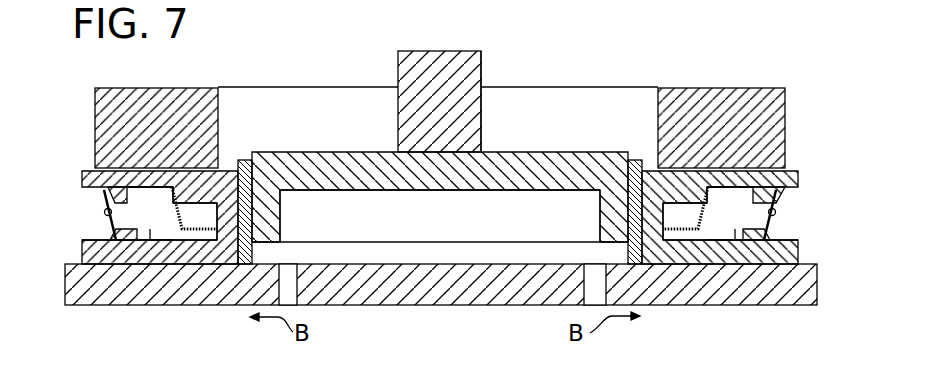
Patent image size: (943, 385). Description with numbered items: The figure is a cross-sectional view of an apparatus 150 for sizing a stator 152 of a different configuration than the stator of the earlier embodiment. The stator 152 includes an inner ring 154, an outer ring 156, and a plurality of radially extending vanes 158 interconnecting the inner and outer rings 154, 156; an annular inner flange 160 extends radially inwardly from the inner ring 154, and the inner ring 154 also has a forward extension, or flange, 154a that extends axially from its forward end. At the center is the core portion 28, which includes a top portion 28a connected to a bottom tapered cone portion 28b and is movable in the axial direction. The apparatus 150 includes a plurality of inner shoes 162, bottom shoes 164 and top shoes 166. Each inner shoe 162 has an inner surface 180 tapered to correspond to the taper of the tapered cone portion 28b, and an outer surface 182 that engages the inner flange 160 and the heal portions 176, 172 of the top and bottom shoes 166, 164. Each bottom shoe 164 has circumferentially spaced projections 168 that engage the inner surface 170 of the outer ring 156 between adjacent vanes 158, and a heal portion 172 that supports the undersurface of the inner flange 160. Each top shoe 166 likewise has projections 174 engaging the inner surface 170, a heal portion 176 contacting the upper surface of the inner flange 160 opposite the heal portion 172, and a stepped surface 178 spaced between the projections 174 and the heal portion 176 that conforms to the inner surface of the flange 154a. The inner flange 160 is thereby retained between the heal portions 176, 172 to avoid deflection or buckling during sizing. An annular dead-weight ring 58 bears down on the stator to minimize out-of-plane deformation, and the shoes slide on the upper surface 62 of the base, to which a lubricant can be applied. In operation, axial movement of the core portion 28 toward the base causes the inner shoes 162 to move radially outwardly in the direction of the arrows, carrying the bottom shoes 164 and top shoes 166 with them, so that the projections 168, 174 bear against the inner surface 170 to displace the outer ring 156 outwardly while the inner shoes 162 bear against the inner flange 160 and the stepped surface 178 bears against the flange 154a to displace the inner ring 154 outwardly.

The apparatus 150 is at (708, 36).
The dead-weight ring 58 is at (112, 88).
The core portion 28 is at (486, 74).
The top portion 28a is at (482, 106).
The bottom tapered cone portion 28b is at (372, 152).
The heal portion 176 is at (240, 205).
The outer surface 182 is at (241, 185).
The inner shoe 162 is at (233, 209).
The inner surface 180 is at (250, 216).
The upper surface 62 is at (398, 264).
The stepped surface 178 is at (108, 160).
The projection 174 is at (130, 185).
The top shoe 166 is at (145, 185).
The forward extension 154a is at (168, 185).
The inner surface 170 is at (106, 210).
The outer ring 156 is at (106, 228).
The projection 168 is at (123, 241).
The bottom shoe 164 is at (140, 242).
The vane 158 is at (147, 232).
The stator 152 is at (158, 232).
The inner ring 154 is at (177, 222).
The heal portion 172 is at (230, 237).
The inner flange 160 is at (208, 228).